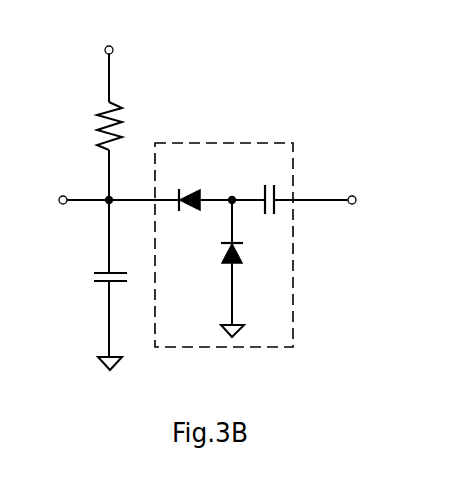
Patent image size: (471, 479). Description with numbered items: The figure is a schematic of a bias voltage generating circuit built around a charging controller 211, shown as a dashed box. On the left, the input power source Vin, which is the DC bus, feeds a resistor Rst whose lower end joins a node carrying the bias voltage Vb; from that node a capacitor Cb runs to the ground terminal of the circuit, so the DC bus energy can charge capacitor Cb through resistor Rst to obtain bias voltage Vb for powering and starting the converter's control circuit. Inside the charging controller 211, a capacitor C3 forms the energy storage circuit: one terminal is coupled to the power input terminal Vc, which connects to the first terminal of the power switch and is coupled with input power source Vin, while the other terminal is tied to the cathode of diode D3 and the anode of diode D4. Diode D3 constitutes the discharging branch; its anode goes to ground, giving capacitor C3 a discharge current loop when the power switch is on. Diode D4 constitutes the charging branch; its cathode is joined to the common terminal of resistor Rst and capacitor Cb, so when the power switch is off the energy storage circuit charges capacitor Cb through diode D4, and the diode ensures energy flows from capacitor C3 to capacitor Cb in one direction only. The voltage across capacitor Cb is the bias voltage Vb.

The charging controller 211 is at (234, 143).
The input power source Vin is at (129, 70).
The resistor Rst is at (84, 126).
The bias voltage Vb is at (104, 199).
The capacitor Cb is at (88, 274).
The diode D4 is at (188, 187).
The capacitor C3 is at (269, 188).
The power input terminal Vc is at (333, 199).
The diode D3 is at (251, 233).